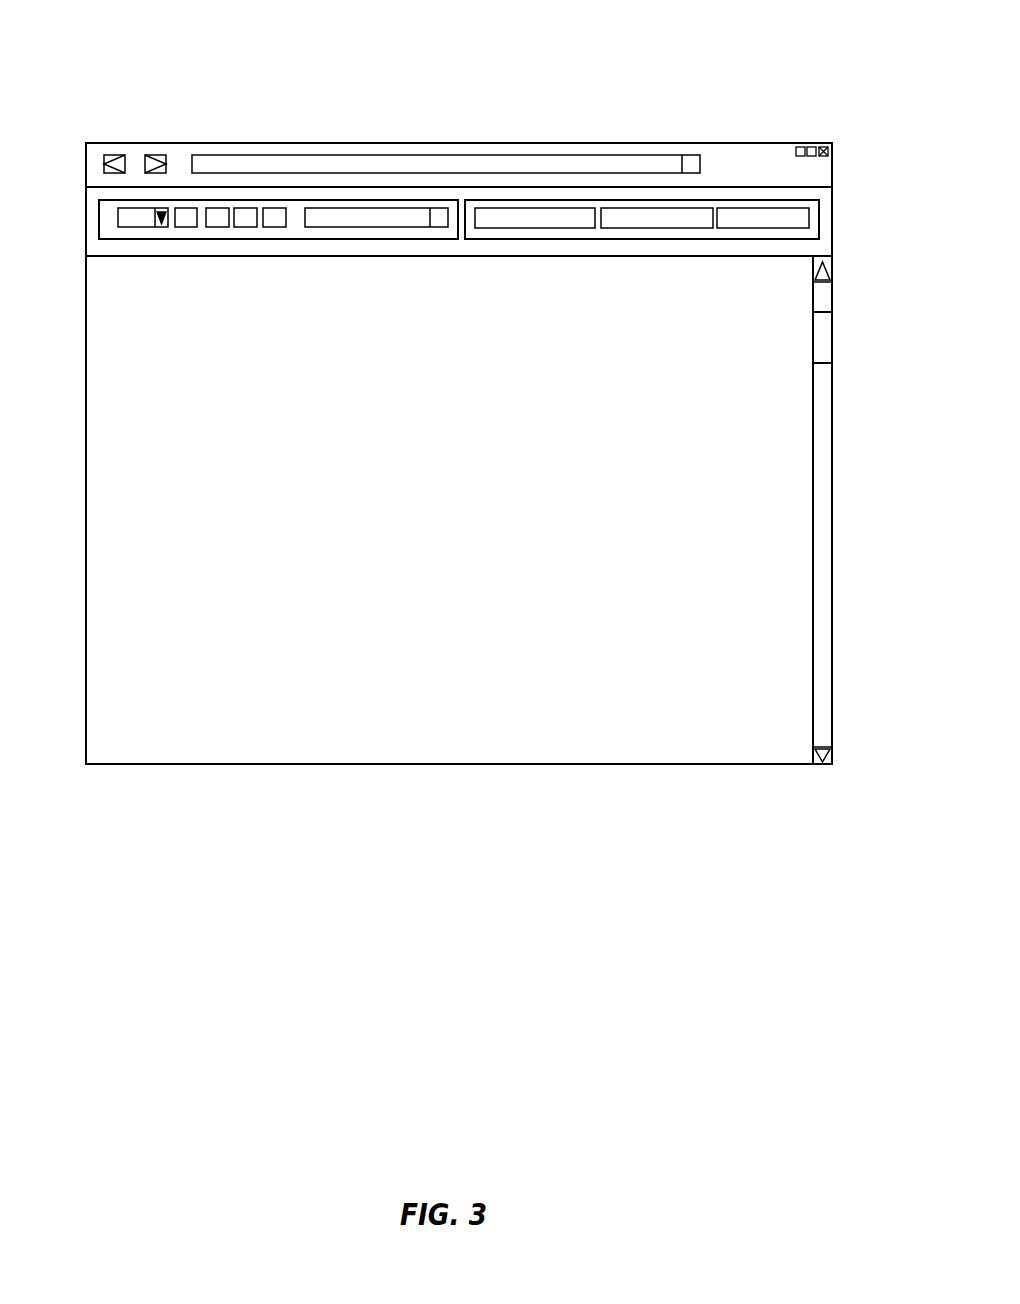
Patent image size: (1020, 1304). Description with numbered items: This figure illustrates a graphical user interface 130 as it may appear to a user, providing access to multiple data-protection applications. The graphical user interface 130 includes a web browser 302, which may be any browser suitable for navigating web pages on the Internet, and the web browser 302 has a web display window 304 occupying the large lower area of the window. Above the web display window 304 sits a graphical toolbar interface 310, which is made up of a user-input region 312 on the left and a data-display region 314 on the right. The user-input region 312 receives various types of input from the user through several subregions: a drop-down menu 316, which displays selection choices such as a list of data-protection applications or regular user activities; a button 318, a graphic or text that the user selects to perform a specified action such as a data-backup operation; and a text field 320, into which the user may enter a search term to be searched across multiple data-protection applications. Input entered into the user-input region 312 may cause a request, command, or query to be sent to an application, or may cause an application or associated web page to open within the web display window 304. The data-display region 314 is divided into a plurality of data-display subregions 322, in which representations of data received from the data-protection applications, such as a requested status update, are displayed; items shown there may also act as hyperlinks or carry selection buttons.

The graphical user interface 130 is at (92, 88).
The web browser 302 is at (357, 143).
The web display window 304 is at (480, 486).
The graphical toolbar interface 310 is at (735, 187).
The user-input region 312 is at (99, 207).
The data-display region 314 is at (819, 219).
The drop-down menu 316 is at (118, 215).
The button 318 is at (215, 208).
The text field 320 is at (396, 208).
The data-display subregions 322 is at (500, 208).